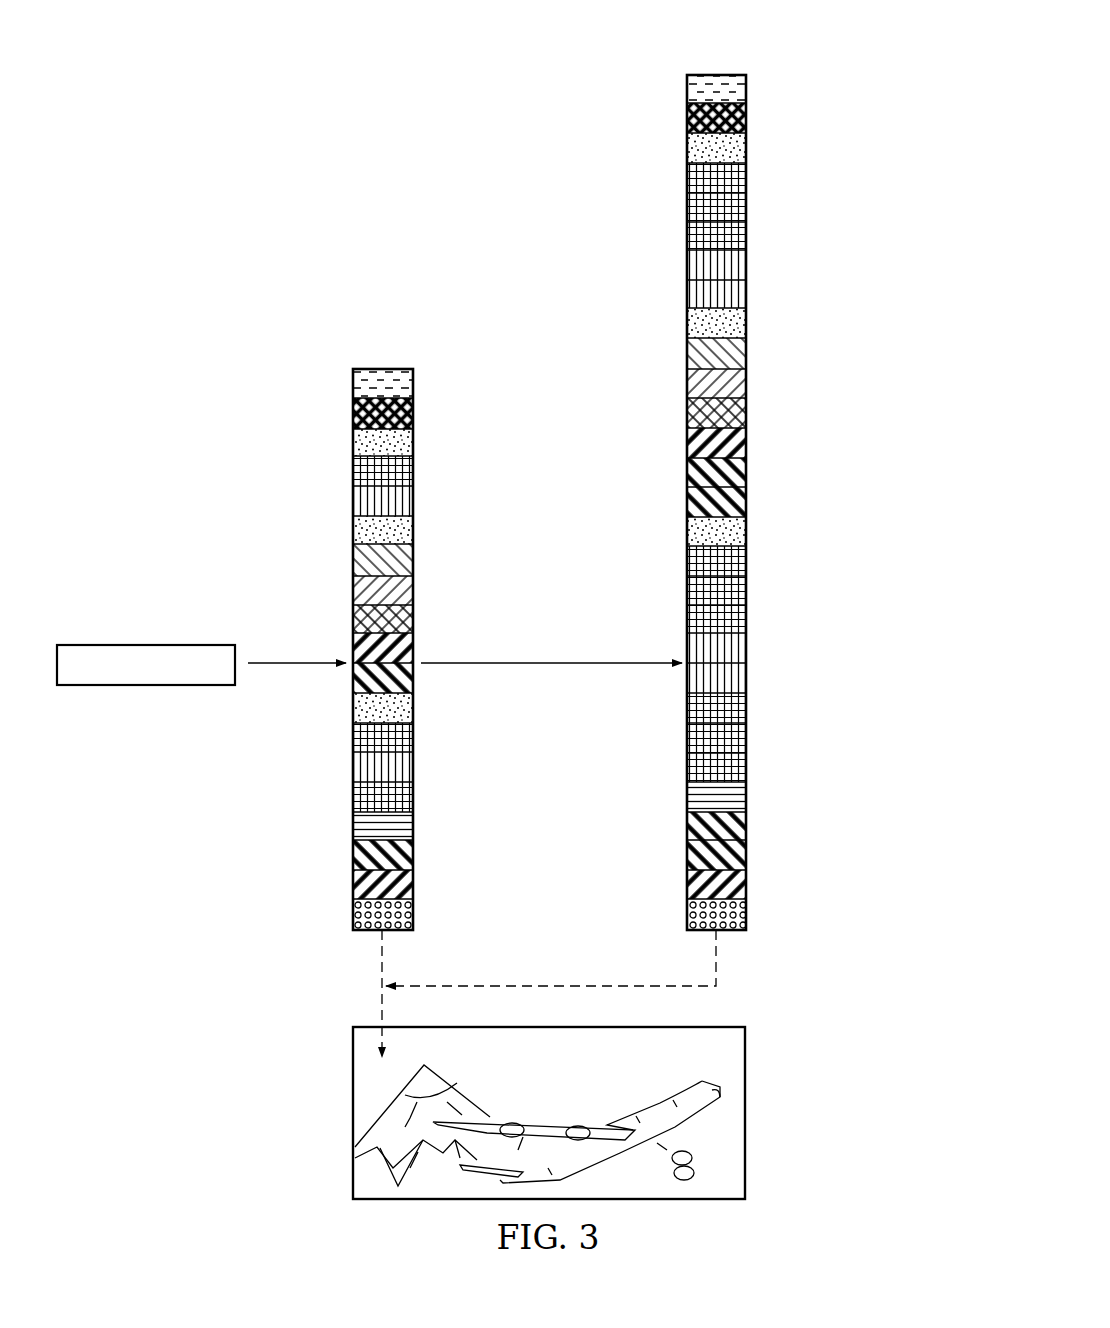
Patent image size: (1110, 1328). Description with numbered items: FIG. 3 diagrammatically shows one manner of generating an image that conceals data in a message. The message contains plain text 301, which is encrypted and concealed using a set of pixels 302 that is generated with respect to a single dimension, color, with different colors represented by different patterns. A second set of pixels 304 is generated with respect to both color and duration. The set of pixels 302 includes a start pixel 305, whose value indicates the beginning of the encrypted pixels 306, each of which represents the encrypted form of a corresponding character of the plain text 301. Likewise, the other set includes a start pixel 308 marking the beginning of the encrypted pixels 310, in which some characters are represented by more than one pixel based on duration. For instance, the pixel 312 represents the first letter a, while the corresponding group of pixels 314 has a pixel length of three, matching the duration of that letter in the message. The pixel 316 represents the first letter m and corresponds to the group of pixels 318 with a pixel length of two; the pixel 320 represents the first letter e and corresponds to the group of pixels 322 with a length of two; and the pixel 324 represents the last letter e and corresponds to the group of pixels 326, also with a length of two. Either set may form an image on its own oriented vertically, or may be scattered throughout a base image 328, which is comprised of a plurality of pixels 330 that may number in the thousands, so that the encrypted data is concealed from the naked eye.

The plain text 301 is at (147, 686).
The set of pixels 302 is at (270, 612).
The set of pixels 304 is at (716, 465).
The start pixel 305 is at (355, 385).
The encrypted pixels 306 is at (423, 792).
The start pixel 308 is at (689, 92).
The encrypted pixels 310 is at (772, 203).
The pixel 312 is at (355, 473).
The group of pixels 314 is at (683, 165).
The pixel 316 is at (355, 503).
The group of pixels 318 is at (683, 253).
The pixel 320 is at (355, 652).
The group of pixels 322 is at (683, 459).
The pixel 324 is at (356, 857).
The group of pixels 326 is at (683, 813).
The base image 328 is at (511, 1113).
The plurality of pixels 330 is at (548, 1086).